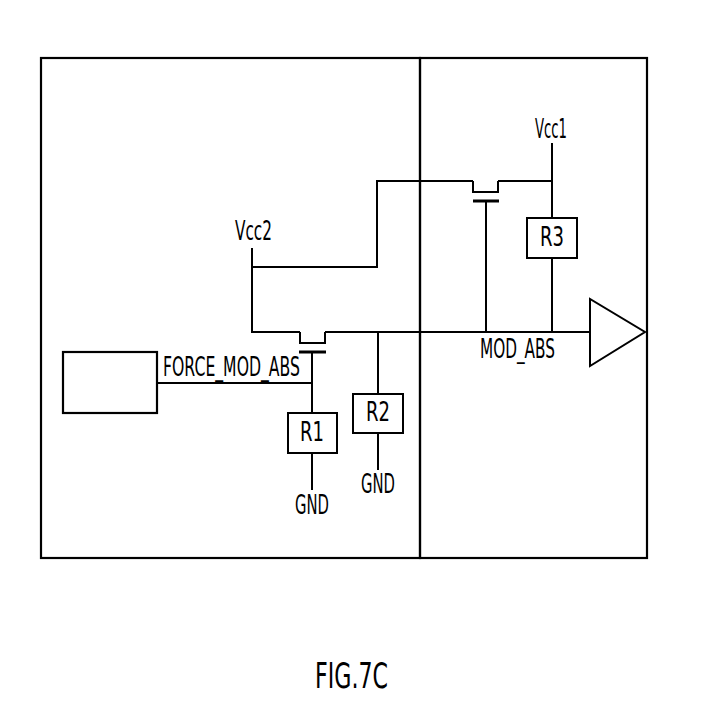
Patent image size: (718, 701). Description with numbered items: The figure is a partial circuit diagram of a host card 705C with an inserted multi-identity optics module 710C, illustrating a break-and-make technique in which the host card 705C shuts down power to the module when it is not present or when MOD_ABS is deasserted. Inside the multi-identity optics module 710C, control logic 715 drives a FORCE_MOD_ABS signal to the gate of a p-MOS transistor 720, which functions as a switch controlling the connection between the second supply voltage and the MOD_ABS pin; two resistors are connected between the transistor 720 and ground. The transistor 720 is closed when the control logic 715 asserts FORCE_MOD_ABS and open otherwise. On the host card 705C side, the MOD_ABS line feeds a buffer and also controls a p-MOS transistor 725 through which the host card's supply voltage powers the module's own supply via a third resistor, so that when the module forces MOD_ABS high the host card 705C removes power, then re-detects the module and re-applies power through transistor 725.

The host card 705C is at (568, 58).
The multi-identity optics module 710C is at (137, 58).
The control logic 715 is at (111, 352).
The p-MOS transistor 720 is at (300, 343).
The p-MOS transistor 725 is at (473, 188).